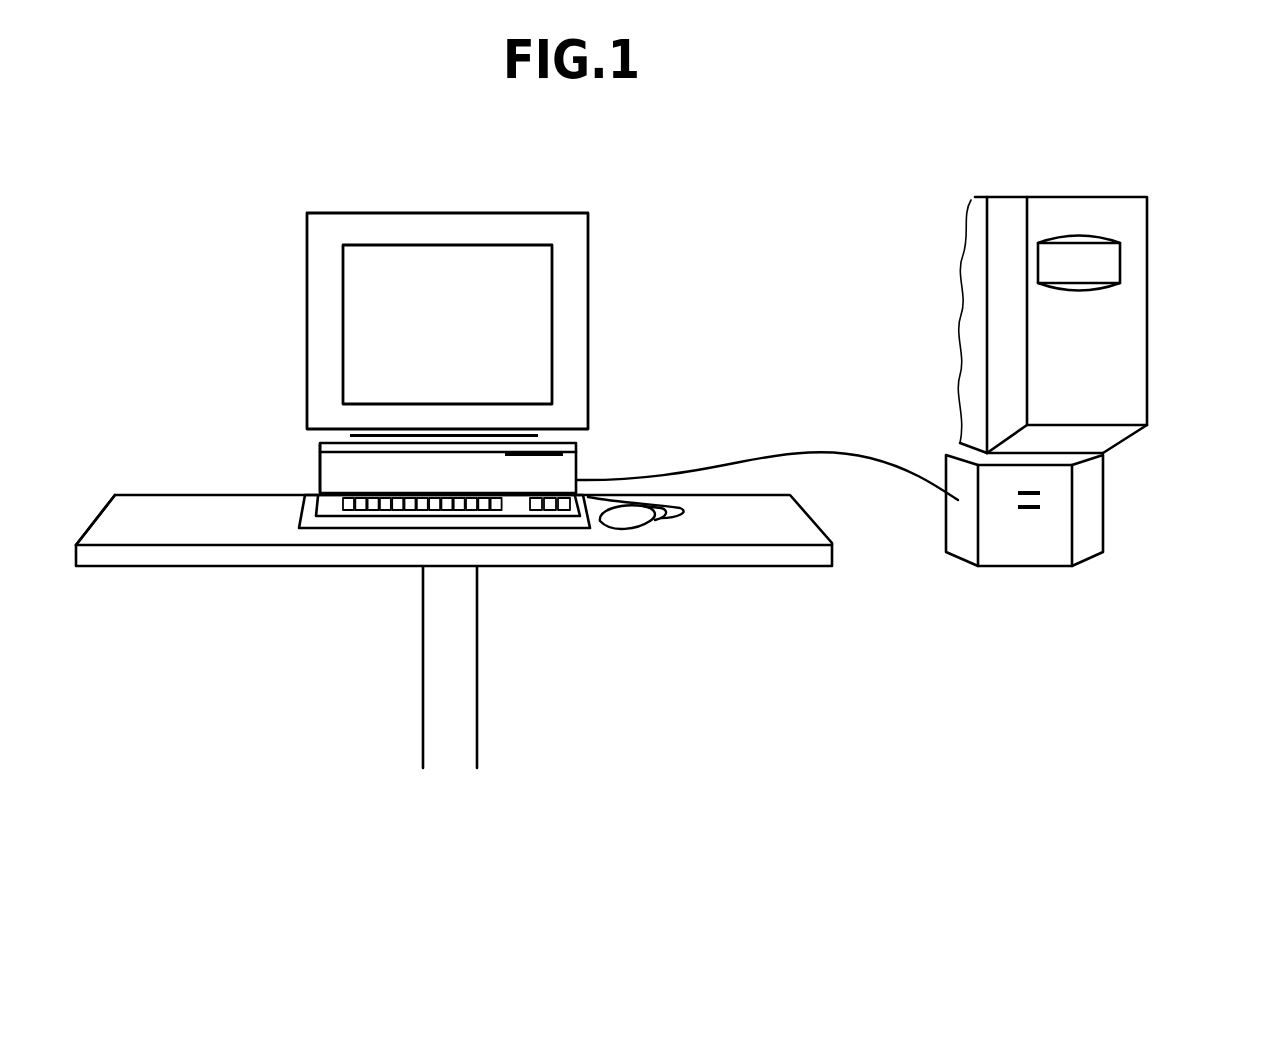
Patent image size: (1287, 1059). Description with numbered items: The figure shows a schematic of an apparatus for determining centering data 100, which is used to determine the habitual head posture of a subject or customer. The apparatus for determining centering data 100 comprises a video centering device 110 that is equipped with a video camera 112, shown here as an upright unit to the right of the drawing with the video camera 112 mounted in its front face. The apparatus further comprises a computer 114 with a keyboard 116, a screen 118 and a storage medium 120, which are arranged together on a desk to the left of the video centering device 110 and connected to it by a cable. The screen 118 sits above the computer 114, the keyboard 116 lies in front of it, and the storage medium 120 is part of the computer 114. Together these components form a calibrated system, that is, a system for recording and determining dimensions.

The apparatus for determining centering data 100 is at (735, 186).
The video centering device 110 is at (1123, 207).
The video camera 112 is at (1112, 270).
The computer 114 is at (577, 475).
The keyboard 116 is at (583, 513).
The screen 118 is at (567, 315).
The storage medium 120 is at (332, 473).